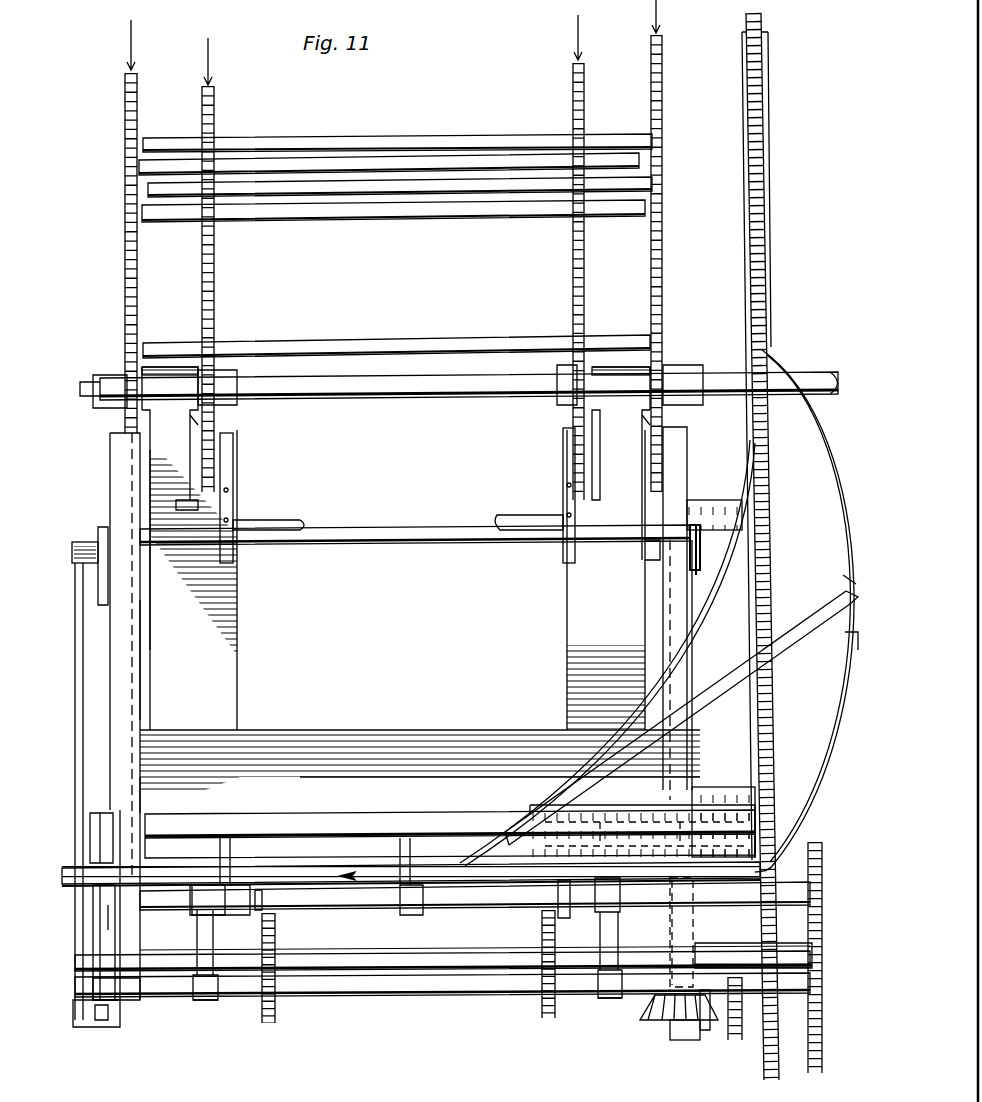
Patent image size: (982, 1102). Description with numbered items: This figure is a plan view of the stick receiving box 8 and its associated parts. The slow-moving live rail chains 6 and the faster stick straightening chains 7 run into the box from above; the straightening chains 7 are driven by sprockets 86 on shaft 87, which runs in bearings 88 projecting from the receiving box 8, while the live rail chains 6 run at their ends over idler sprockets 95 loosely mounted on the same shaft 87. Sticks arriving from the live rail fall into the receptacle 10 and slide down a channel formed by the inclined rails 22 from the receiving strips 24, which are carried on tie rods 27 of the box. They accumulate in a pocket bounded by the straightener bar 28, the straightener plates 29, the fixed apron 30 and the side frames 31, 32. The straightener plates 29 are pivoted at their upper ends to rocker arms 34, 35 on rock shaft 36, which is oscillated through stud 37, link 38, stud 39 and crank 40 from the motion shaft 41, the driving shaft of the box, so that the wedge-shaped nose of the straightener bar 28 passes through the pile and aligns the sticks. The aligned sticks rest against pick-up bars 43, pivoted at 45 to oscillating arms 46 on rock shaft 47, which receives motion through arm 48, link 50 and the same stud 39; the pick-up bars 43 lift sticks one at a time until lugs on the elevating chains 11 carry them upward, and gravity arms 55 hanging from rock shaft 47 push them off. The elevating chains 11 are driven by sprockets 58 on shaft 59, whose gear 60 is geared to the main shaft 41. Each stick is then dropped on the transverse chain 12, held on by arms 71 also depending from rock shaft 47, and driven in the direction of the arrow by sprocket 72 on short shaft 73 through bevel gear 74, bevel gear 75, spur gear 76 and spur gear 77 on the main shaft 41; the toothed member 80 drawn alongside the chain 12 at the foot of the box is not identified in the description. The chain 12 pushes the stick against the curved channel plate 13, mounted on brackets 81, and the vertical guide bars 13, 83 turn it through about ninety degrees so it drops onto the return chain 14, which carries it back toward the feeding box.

The live rail chains 6 is at (214, 103).
The stick straightening chains 7 is at (125, 97).
The stick receiving box 8 is at (400, 465).
The receptacle 10 is at (295, 780).
The elevating chains 11 is at (280, 1003).
The transverse chain 12 is at (330, 870).
The curve guide 13 is at (850, 625).
The return chain 14 is at (760, 128).
The inclined rails 22 is at (397, 580).
The receiving strips 24 is at (233, 450).
The tie rods 27 is at (283, 520).
The straightener bar 28 is at (600, 739).
The straightener plates 29 is at (140, 712).
The fixed apron 30 is at (385, 845).
The side frame 31 is at (125, 635).
The side frame 32 is at (670, 562).
The rocker arm 34 is at (98, 540).
The rocker arm 35 is at (700, 555).
The rock shaft 36 is at (437, 520).
The stud 37 is at (72, 552).
The link 38 is at (75, 682).
The stud 39 is at (75, 1015).
The crank 40 is at (93, 985).
The motion shaft 41 is at (442, 985).
The pick-up bars 43 is at (215, 980).
The pivot connection 45 is at (195, 1000).
The oscillating arms 46 is at (197, 936).
The rock shaft 47 is at (355, 905).
The arm 48 is at (93, 936).
The link 50 is at (100, 1025).
The gravity arms 55 is at (276, 918).
The sprockets 58 is at (268, 1025).
The shaft 59 is at (405, 960).
The gear 60 is at (822, 868).
The arms 71 is at (228, 840).
The sprocket 72 is at (722, 865).
The short shaft 73 is at (685, 1031).
The bevel gear 74 is at (645, 1022).
The bevel gear 75 is at (706, 1030).
The spur gear 76 is at (733, 985).
The spur gear 77 is at (742, 1028).
The rack 80 is at (62, 880).
The brackets 81 is at (708, 505).
The vertical guide bar 83 is at (615, 748).
The sprockets 86 is at (125, 356).
The shaft 87 is at (370, 382).
The bearings 88 is at (396, 463).
The idler sprockets 95 is at (215, 418).